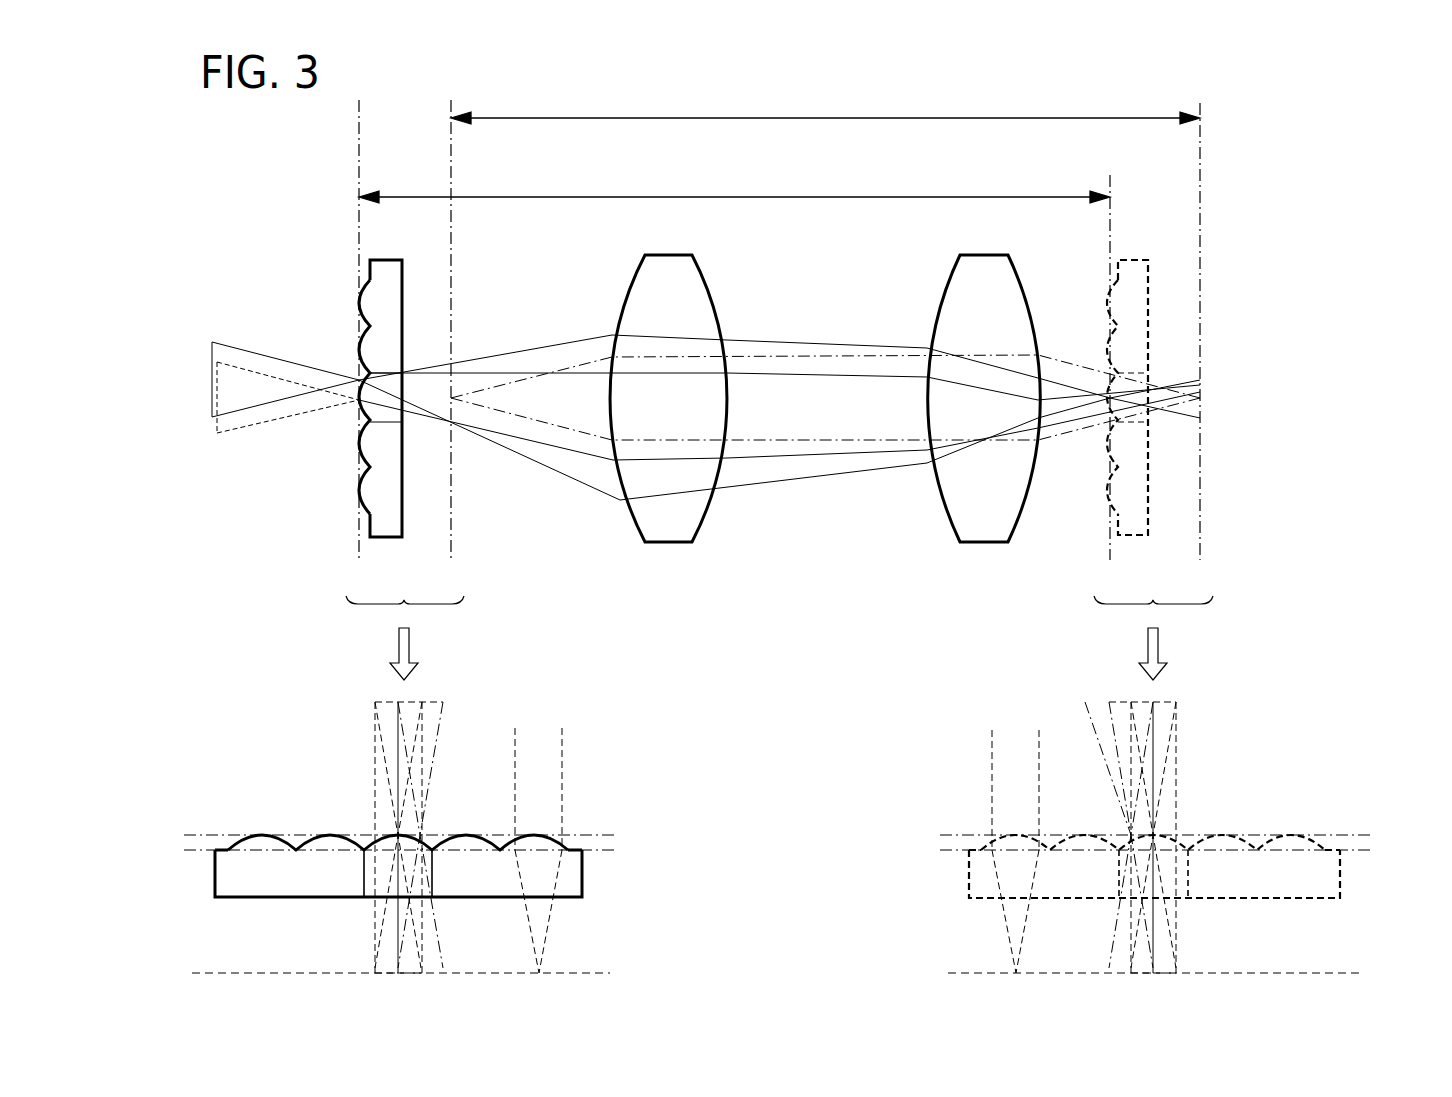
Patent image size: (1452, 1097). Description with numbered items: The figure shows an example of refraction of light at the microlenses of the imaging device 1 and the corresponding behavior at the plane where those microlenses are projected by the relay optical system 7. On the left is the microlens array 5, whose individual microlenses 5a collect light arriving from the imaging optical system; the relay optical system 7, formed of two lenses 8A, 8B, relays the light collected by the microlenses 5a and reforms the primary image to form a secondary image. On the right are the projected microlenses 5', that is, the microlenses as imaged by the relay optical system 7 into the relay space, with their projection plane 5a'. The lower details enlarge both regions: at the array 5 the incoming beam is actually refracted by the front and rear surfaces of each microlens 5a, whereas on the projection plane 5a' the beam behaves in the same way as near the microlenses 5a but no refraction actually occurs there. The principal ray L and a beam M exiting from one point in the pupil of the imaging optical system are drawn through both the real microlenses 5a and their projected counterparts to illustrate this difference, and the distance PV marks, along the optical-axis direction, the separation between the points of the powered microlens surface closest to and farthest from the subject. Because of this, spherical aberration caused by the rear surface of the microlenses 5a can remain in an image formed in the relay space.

The imaging device 1 is at (192, 192).
The microlens array 5 is at (355, 595).
The microlens 5a is at (398, 565).
The projected microlenses 5' is at (1199, 571).
The projection plane of the microlenses 5a' is at (1153, 547).
The relay optical system 7 is at (1013, 633).
The lens 8A is at (667, 543).
The lens 8B is at (980, 543).
The principal ray L is at (396, 726).
The beam exiting from one point in the pupil M is at (562, 776).
The PV distance PV is at (777, 847).